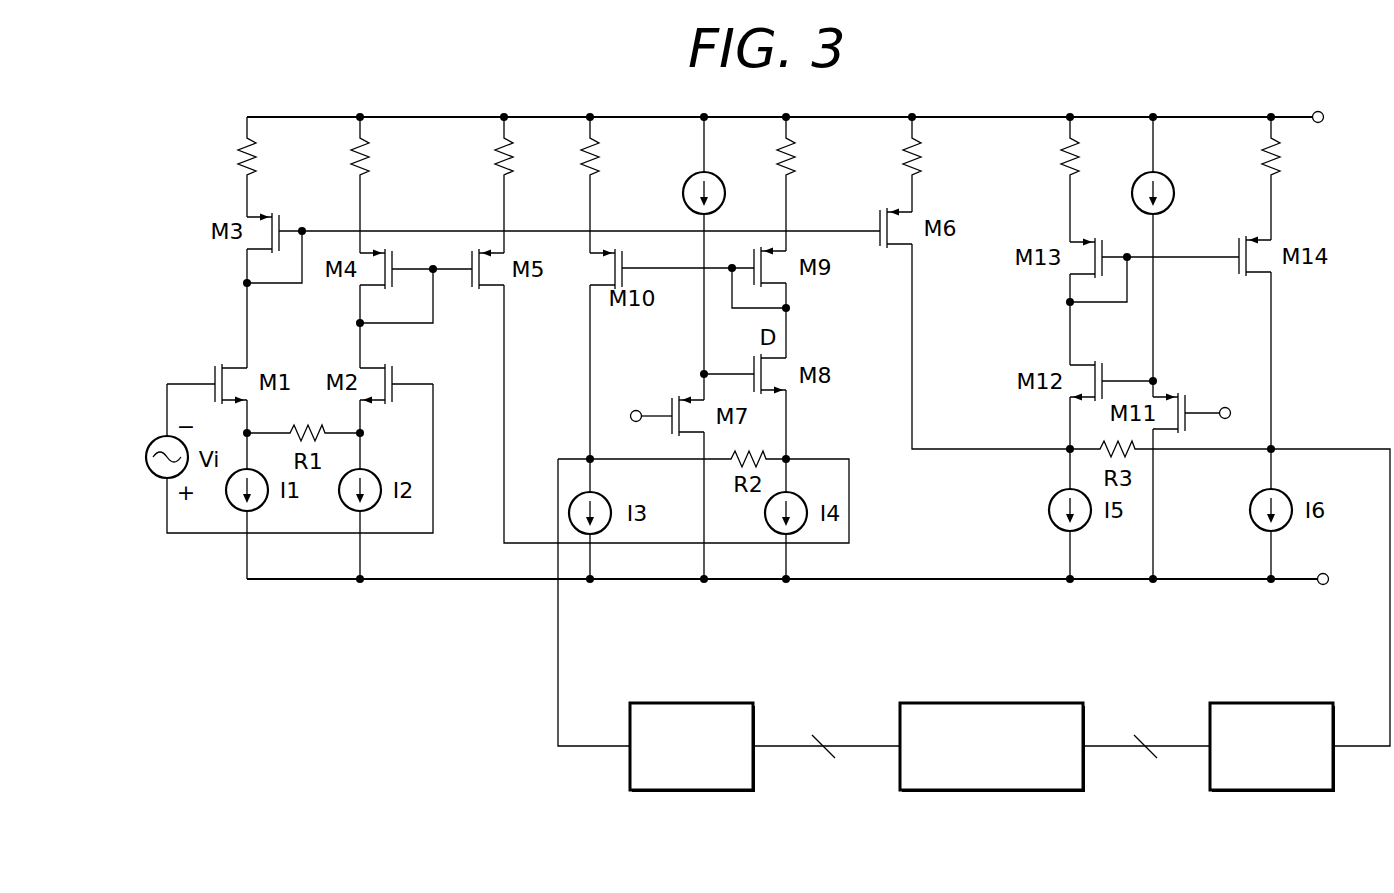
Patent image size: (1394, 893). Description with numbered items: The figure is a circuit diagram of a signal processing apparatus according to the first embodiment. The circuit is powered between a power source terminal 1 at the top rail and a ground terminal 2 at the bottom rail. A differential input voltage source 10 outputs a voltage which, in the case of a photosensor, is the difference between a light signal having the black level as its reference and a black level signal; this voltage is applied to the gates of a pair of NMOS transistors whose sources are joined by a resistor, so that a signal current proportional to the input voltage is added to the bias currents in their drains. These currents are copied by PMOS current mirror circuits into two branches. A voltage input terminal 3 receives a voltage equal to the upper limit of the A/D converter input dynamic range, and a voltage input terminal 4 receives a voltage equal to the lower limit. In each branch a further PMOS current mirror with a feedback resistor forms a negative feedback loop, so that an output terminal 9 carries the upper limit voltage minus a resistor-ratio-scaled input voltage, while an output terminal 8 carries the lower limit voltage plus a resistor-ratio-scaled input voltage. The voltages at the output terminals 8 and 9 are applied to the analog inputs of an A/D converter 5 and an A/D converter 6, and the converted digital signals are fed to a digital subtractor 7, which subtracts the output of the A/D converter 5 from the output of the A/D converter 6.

The power source terminal 1 is at (1324, 115).
The ground terminal 2 is at (1329, 577).
The voltage input terminal 3 is at (636, 410).
The voltage input terminal 4 is at (1225, 407).
The A/D converter 5 is at (744, 703).
The A/D converter 6 is at (1315, 703).
The digital subtractor 7 is at (1050, 703).
The output terminal 8 is at (1316, 412).
The output terminal 9 is at (588, 457).
The differential input voltage source 10 is at (146, 457).